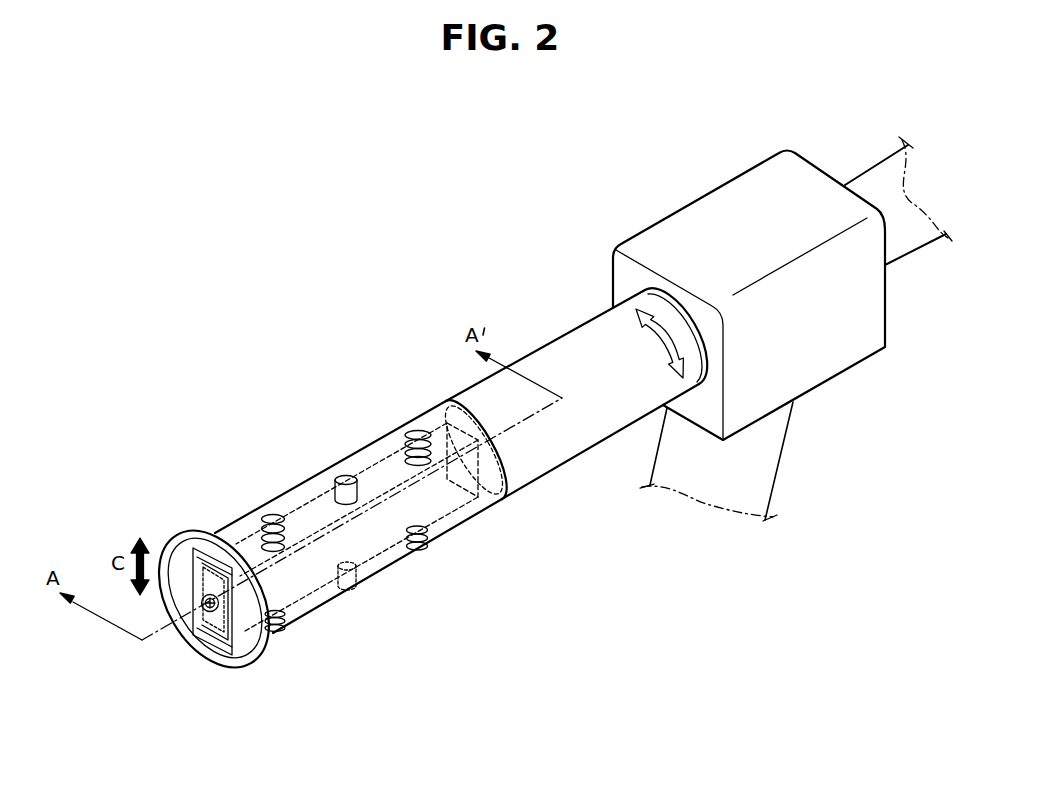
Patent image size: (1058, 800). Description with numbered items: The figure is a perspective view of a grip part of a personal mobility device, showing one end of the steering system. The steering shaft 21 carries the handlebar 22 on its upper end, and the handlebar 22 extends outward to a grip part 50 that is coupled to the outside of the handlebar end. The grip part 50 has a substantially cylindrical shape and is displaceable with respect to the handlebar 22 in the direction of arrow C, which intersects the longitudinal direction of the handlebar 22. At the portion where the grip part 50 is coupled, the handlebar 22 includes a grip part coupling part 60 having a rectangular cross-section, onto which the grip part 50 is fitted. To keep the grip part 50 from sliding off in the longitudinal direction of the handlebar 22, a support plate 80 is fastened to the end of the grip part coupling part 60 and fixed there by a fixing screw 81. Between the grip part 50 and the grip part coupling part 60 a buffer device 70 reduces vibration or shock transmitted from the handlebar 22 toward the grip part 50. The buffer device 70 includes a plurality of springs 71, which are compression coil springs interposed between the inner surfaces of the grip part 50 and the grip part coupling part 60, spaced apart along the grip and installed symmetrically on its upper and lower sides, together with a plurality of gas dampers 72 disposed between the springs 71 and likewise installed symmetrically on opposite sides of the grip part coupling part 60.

The steering shaft 21 is at (762, 466).
The handlebar 22 is at (568, 348).
The grip part 50 is at (278, 480).
The grip part coupling part 60 is at (373, 540).
The buffer device 70 is at (348, 514).
The spring 71 is at (265, 517).
The gas damper 72 is at (345, 476).
The support plate 80 is at (220, 623).
The fixing screw 81 is at (205, 606).